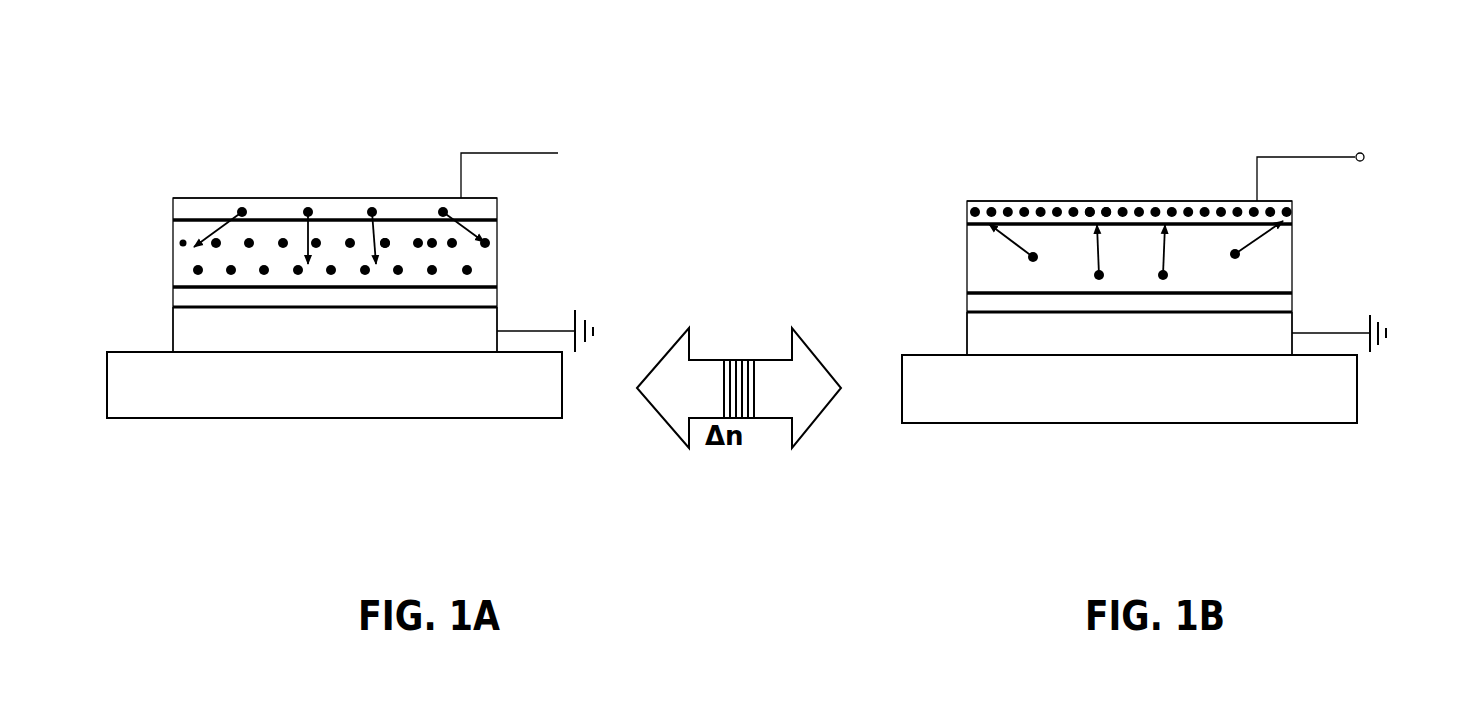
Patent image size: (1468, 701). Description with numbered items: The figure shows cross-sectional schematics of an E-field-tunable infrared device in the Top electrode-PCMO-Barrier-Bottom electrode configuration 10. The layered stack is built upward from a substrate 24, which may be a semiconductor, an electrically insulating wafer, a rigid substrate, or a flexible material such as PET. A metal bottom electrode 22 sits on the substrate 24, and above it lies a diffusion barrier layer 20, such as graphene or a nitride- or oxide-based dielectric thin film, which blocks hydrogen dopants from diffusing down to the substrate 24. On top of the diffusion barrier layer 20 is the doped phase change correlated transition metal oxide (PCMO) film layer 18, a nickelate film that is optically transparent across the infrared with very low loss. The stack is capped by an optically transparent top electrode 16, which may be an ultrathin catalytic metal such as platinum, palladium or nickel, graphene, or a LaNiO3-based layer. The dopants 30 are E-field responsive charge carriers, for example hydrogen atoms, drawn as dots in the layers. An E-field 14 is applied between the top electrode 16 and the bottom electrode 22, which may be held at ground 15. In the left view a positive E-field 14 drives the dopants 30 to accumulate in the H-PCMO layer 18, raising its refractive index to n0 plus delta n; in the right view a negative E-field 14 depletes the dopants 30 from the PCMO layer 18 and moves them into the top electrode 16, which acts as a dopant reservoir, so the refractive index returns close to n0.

In FIG. 1A, the Top electrode-PCMO-Barrier-Bottom electrode configuration 10 is at (405, 100).
In FIG. 1B, the Top electrode-PCMO-Barrier-Bottom electrode configuration 10 is at (1100, 130).
In FIG. 1A, the E-field 14 is at (535, 153).
In FIG. 1B, the E-field 14 is at (1357, 155).
In FIG. 1A, the ground 15 is at (563, 333).
In FIG. 1B, the ground 15 is at (1362, 335).
In FIG. 1A, the optically transparent top electrode 16 is at (310, 198).
In FIG. 1B, the optically transparent top electrode 16 is at (1025, 203).
In FIG. 1A, the doped phase change correlated transition metal oxide (PCMO) film layer 18 is at (185, 241).
In FIG. 1B, the doped phase change correlated transition metal oxide (PCMO) film layer 18 is at (985, 250).
In FIG. 1A, the diffusion barrier layer 20 is at (475, 298).
In FIG. 1B, the diffusion barrier layer 20 is at (1270, 301).
In FIG. 1A, the metal bottom electrode 22 is at (222, 327).
In FIG. 1B, the metal bottom electrode 22 is at (982, 330).
In FIG. 1A, the substrate 24 is at (225, 407).
In FIG. 1B, the substrate 24 is at (930, 381).
In FIG. 1A, the dopants 30 is at (392, 246).
In FIG. 1B, the dopants 30 is at (1098, 212).